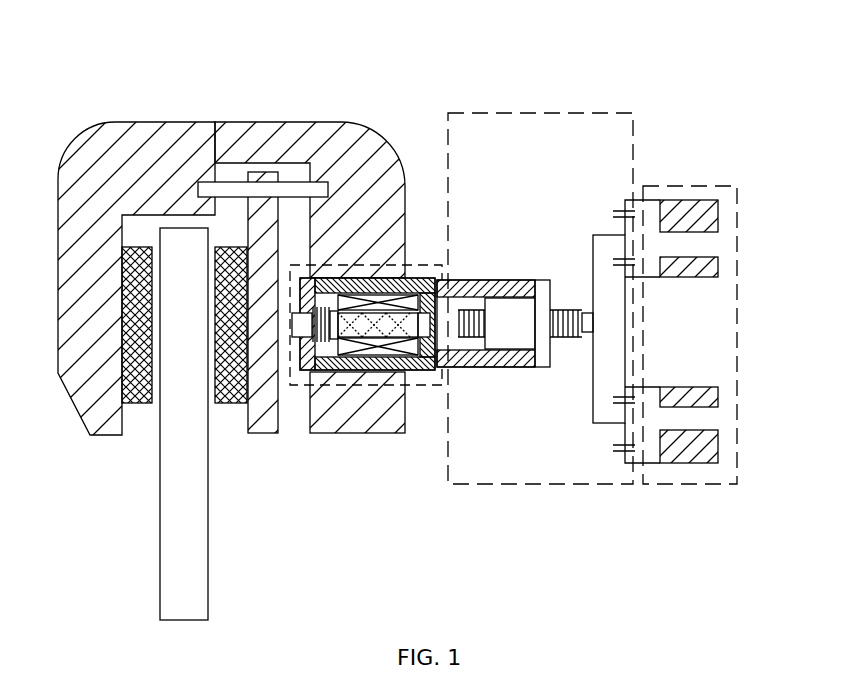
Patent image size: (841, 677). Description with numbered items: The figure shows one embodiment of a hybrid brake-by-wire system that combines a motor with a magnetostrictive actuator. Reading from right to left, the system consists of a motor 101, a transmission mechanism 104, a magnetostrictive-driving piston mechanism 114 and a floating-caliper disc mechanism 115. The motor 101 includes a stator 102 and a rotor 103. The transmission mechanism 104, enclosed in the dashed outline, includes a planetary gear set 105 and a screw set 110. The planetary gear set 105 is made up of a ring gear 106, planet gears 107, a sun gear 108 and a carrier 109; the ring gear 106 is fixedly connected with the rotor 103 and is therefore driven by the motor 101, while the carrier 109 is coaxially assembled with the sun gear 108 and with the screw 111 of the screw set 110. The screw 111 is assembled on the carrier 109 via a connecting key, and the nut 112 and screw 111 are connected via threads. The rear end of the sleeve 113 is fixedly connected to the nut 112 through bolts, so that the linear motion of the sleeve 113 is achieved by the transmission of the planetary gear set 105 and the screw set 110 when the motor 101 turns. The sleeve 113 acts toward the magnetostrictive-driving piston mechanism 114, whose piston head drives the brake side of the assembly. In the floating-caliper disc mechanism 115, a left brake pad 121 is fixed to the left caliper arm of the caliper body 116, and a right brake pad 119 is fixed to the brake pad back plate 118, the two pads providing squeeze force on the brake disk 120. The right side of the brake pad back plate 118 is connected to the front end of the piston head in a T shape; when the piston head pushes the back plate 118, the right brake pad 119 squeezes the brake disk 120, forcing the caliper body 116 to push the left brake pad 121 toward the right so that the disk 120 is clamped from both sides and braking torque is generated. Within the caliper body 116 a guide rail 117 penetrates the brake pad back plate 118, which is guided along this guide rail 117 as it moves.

The motor 101 is at (663, 182).
The stator 102 is at (702, 257).
The rotor 103 is at (702, 210).
The transmission mechanism 104 is at (638, 133).
The planetary gear set 105 is at (628, 420).
The ring gear 106 is at (622, 215).
The planet gears 107 is at (623, 236).
The sun gear 108 is at (618, 262).
The carrier 109 is at (590, 280).
The screw set 110 is at (511, 278).
The screw 111 is at (575, 335).
The nut 112 is at (492, 333).
The sleeve 113 is at (450, 357).
The magnetostrictive-driving piston mechanism 114 is at (410, 387).
The floating-caliper disc mechanism 115 is at (393, 137).
The caliper body 116 is at (335, 155).
The guide rail 117 is at (240, 190).
The brake pad back plate 118 is at (267, 418).
The right brake pad 119 is at (230, 407).
The brake disk 120 is at (168, 427).
The left brake pad 121 is at (142, 397).